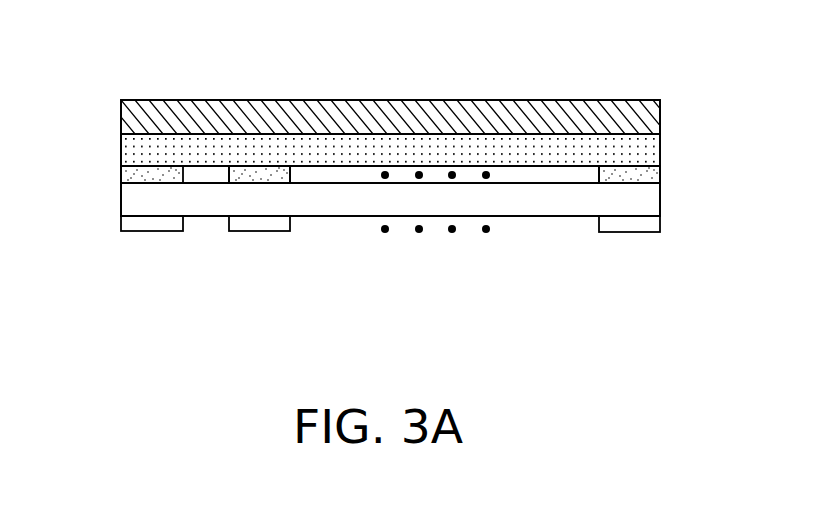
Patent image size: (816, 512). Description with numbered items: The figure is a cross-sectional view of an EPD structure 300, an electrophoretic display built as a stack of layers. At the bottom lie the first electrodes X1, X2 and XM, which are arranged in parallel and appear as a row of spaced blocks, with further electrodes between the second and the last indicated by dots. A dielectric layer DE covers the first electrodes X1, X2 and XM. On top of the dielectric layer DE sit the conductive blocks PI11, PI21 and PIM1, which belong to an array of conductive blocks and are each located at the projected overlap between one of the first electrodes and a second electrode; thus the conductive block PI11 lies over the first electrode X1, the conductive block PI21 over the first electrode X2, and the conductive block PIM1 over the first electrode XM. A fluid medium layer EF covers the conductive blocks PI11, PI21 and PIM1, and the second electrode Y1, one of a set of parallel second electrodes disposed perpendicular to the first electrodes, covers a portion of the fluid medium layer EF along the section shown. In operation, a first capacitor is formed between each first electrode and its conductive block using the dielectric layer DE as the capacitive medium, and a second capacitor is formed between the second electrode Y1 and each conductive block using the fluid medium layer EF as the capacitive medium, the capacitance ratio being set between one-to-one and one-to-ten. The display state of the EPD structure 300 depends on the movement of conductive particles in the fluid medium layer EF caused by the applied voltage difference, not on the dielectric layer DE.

The EPD structure 300 is at (720, 330).
The second electrode Y1 is at (134, 113).
The fluid medium layer EF is at (134, 152).
The conductive block PI11 is at (132, 170).
The conductive block PI21 is at (255, 176).
The conductive block PIM1 is at (613, 177).
The dielectric layer DE is at (132, 197).
The first electrode X1 is at (152, 223).
The first electrode X2 is at (257, 223).
The first electrode XM is at (627, 232).